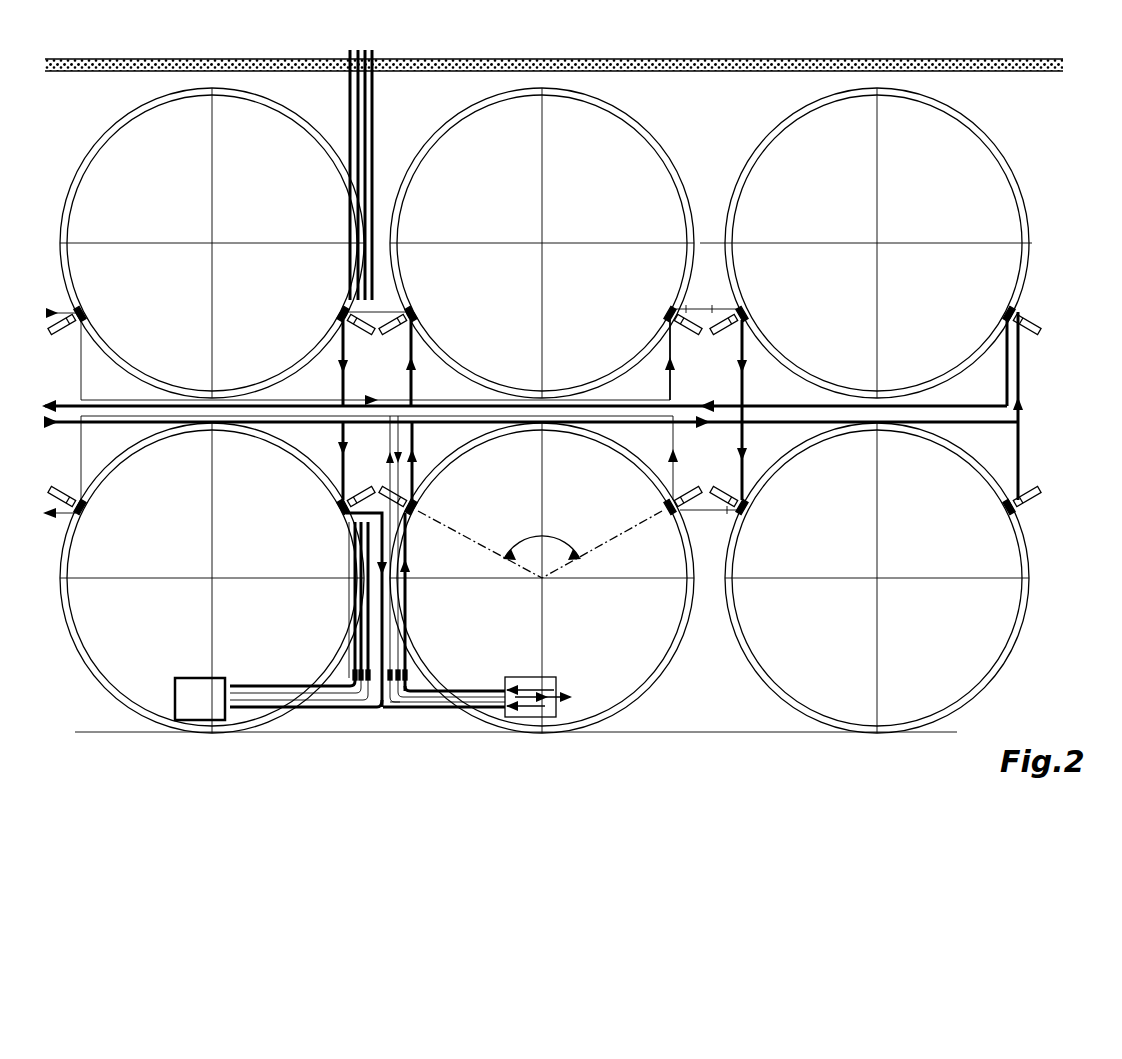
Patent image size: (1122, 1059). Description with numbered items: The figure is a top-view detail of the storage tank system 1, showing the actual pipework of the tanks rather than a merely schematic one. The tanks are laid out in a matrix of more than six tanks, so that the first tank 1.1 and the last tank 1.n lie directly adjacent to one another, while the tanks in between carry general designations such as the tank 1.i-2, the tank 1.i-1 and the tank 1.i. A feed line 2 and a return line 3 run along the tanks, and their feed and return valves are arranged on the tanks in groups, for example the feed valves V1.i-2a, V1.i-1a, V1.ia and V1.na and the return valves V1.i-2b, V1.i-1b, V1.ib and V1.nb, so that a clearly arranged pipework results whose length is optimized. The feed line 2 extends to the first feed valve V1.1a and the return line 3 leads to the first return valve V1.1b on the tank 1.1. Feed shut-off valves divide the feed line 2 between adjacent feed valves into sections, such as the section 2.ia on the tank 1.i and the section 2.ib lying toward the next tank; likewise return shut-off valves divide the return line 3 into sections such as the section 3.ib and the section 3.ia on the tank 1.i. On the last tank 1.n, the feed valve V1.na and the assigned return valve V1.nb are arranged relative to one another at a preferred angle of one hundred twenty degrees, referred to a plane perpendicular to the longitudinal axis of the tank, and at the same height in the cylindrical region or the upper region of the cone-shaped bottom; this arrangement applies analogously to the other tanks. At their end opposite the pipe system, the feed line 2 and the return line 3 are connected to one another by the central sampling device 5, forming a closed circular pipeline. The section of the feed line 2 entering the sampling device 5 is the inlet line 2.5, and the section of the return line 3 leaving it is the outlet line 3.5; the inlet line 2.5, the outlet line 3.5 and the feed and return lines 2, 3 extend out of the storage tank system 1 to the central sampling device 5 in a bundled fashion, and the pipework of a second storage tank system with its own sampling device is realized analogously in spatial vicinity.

The storage tank system 1 is at (716, 93).
The tank 1.i-2 is at (282, 172).
The tank 1.i-1 is at (610, 172).
The tank 1.i is at (922, 172).
The first tank 1.1 is at (270, 518).
The last tank 1.n is at (602, 515).
The feed valve V1.i-2a is at (88, 313).
The return valve V1.i-2b is at (335, 314).
The return valve V1.i-1b is at (416, 312).
The feed valve V1.i-1a is at (662, 312).
The section of the feed line 2.ia is at (707, 302).
The feed valve V1.ia is at (748, 308).
The return valve V1.ib is at (1000, 308).
The section of the feed line 2.ib is at (744, 398).
The section of the return line 3.ib is at (1005, 356).
The section of the return line 3.ia is at (1018, 362).
The first feed valve V1.1a is at (88, 512).
The first return valve V1.1b is at (332, 514).
The return valve V1.nb is at (418, 516).
The feed valve V1.na is at (663, 512).
The outlet line 3.5 is at (421, 690).
The inlet line 2.5 is at (468, 697).
The return line 3 is at (406, 710).
The feed line 2 is at (452, 705).
The central sampling device 5 is at (530, 722).